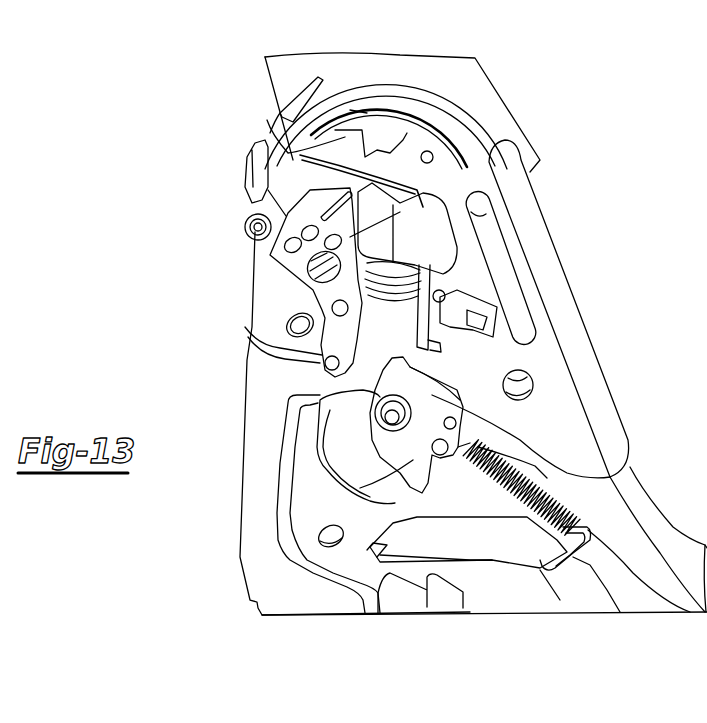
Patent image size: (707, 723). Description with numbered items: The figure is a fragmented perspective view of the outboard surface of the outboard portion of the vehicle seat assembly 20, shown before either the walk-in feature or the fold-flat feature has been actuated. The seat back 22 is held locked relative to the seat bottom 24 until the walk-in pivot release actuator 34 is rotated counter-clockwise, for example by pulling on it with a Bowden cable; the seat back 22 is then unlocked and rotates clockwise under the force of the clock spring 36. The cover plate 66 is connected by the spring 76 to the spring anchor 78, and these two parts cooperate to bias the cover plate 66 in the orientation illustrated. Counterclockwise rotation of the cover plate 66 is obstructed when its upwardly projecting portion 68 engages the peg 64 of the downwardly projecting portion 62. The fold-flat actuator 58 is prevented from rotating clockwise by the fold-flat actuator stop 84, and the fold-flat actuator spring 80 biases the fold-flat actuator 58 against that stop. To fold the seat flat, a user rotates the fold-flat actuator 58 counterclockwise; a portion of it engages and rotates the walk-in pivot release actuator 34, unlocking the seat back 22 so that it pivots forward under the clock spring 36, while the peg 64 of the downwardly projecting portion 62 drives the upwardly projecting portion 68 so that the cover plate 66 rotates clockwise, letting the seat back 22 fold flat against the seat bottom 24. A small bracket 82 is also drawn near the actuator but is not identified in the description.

The vehicle seat assembly 20 is at (186, 263).
The seat back 22 is at (415, 60).
The seat bottom 24 is at (302, 620).
The walk-in pivot release actuator 34 is at (246, 222).
The clock spring 36 is at (407, 172).
The fold-flat actuator 58 is at (373, 217).
The downwardly projecting portion 62 is at (245, 328).
The peg 64 is at (330, 365).
The cover plate 66 is at (387, 477).
The upwardly projecting portion 68 is at (453, 392).
The spring 76 is at (493, 480).
The spring anchor 78 is at (500, 587).
The fold-flat actuator spring 80 is at (398, 307).
The bracket 82 is at (462, 332).
The fold-flat actuator stop 84 is at (343, 143).